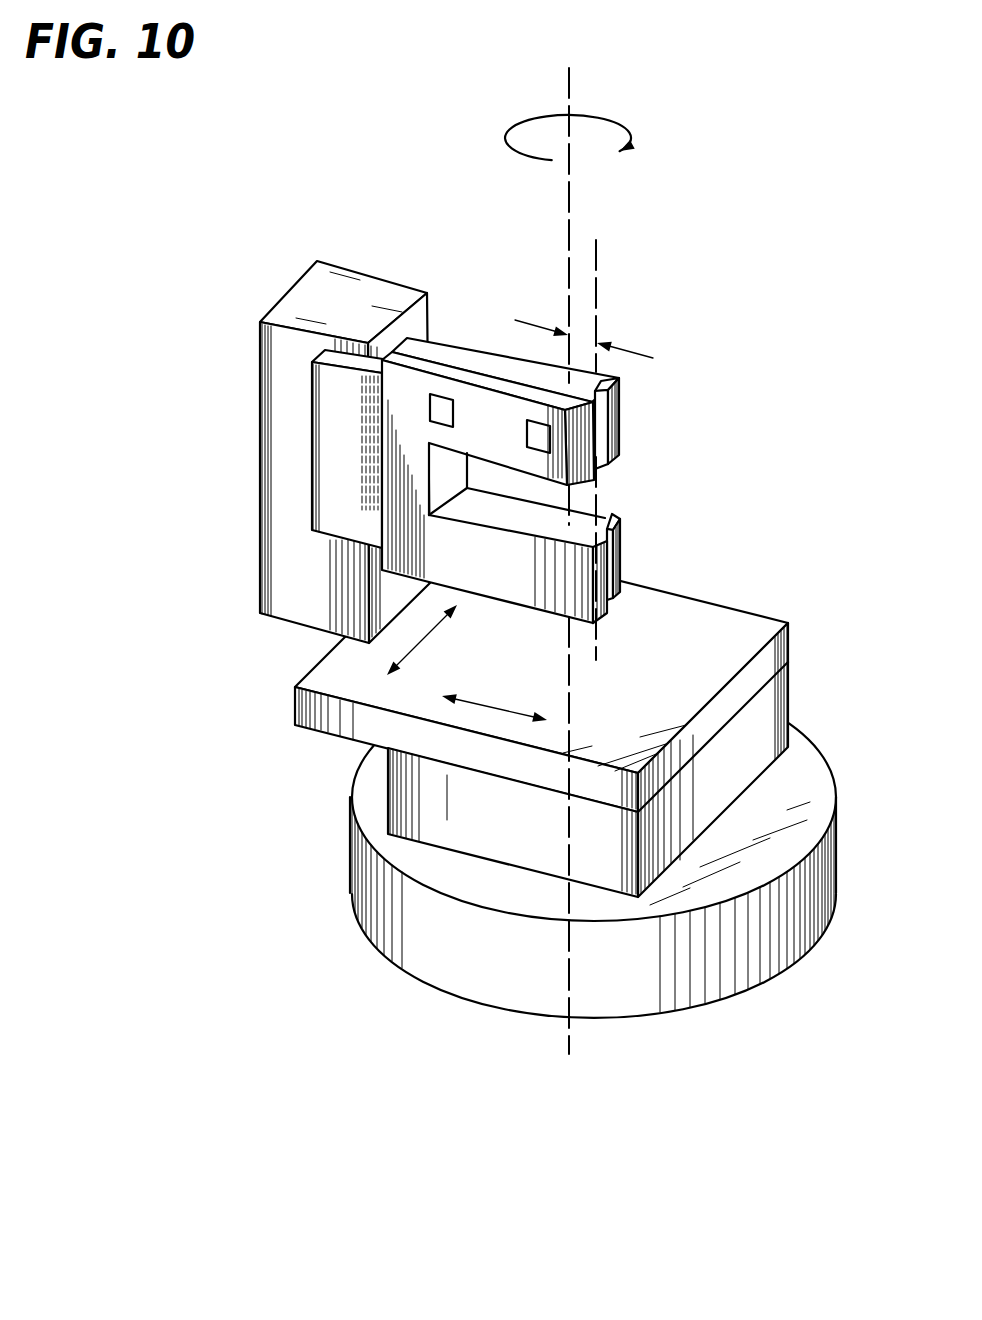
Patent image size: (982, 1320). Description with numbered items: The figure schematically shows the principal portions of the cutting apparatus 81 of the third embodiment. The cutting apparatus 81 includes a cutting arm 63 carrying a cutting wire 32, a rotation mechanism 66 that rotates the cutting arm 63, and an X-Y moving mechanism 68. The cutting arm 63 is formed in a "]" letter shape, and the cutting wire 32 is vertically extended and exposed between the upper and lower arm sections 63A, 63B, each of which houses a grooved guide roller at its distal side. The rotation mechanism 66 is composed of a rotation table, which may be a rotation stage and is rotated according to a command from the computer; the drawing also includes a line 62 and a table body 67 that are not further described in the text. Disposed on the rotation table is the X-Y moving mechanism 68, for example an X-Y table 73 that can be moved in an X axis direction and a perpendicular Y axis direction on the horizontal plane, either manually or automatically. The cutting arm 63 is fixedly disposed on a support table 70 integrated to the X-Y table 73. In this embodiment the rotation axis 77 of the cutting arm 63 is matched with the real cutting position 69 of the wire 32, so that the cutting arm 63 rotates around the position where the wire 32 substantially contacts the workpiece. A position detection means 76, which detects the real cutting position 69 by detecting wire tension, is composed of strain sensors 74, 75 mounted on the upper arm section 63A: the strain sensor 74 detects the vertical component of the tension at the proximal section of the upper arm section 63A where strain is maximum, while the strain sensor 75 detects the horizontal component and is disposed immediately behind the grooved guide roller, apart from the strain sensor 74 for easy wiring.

The cutting wire 32 is at (572, 500).
The reference line 62 is at (597, 258).
The cutting arm 63 is at (331, 404).
The upper arm section 63A is at (515, 407).
The lower arm section 63B is at (498, 583).
The rotation mechanism 66 is at (610, 881).
The rotary table 67 is at (717, 979).
The X-Y moving mechanism 68 is at (552, 717).
The real cutting position 69 is at (567, 78).
The support table 70 is at (338, 668).
The X-Y table 73 is at (767, 708).
The strain sensor 74 is at (437, 413).
The strain sensor 75 is at (527, 435).
The position detection means 76 is at (326, 468).
The rotation axis 77 is at (568, 1038).
The cutting apparatus 81 is at (503, 586).